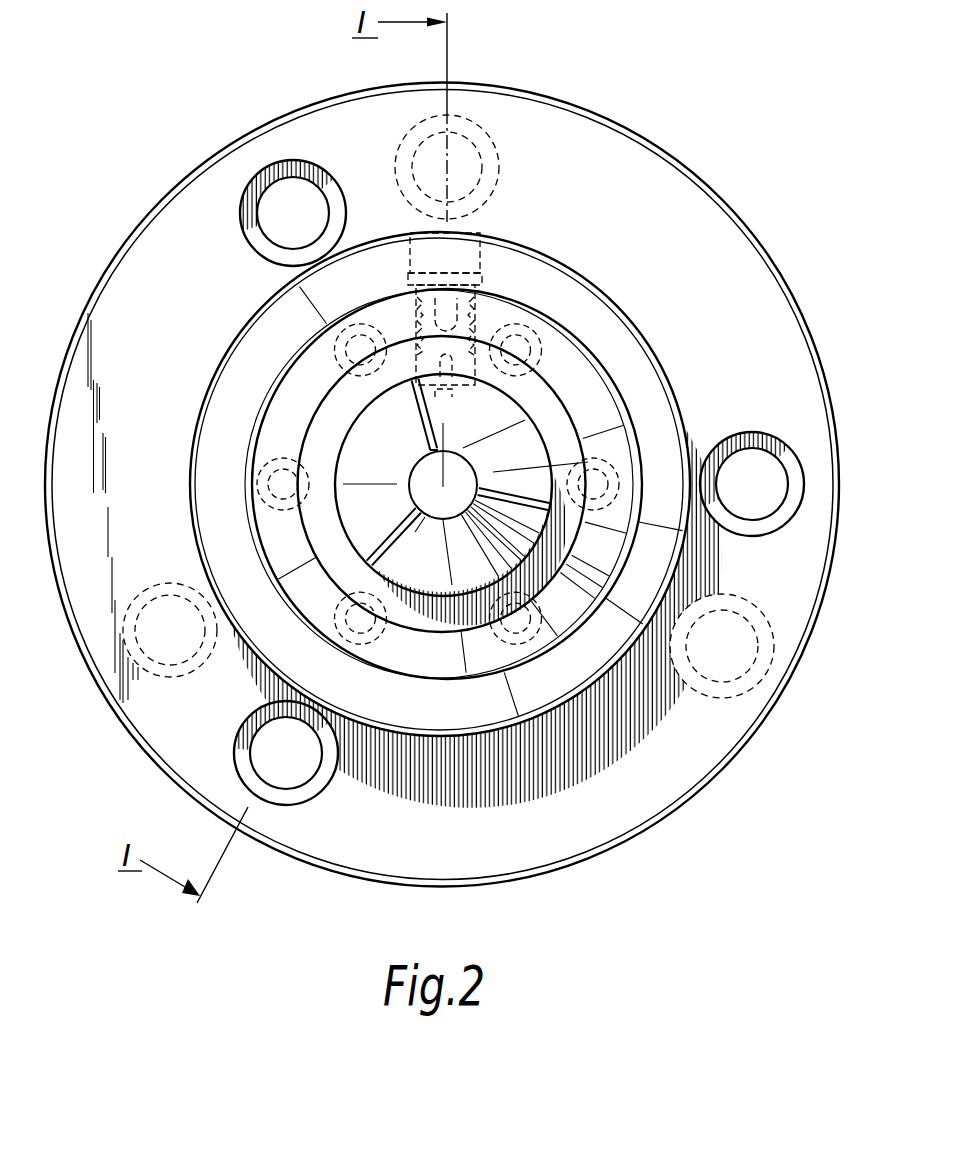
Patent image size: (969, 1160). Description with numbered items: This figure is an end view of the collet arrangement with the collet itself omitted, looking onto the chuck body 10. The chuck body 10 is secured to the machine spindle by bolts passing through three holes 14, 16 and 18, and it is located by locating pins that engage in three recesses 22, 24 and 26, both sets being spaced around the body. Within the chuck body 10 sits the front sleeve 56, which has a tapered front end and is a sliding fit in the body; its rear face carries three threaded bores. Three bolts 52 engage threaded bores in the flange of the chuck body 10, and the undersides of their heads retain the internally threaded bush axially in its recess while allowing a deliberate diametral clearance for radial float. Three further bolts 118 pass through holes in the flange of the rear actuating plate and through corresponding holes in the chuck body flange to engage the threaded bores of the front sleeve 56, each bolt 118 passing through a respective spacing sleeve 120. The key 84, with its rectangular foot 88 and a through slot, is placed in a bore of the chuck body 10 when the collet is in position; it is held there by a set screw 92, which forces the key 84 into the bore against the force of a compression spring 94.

The chuck body 10 is at (583, 302).
The hole 14 is at (305, 787).
The hole 16 is at (272, 197).
The hole 18 is at (763, 482).
The recess 22 is at (472, 148).
The recess 24 is at (143, 661).
The recess 26 is at (752, 650).
The bolt 52 is at (262, 476).
The front sleeve 56 is at (597, 400).
The key 84 is at (493, 283).
The rectangular foot 88 is at (413, 414).
The set screw 92 is at (470, 259).
The compression spring 94 is at (478, 322).
The bolt 118 is at (300, 297).
The spacing sleeve 120 is at (340, 343).